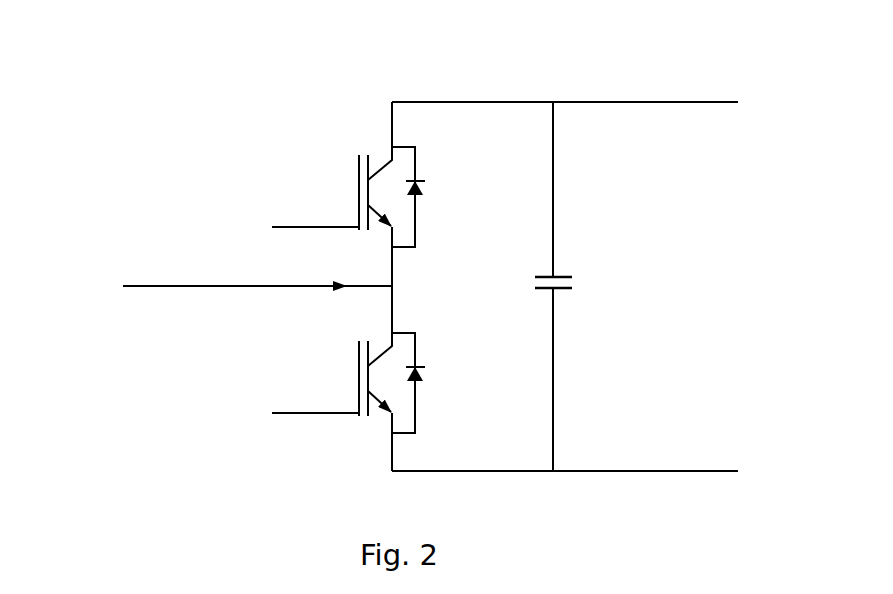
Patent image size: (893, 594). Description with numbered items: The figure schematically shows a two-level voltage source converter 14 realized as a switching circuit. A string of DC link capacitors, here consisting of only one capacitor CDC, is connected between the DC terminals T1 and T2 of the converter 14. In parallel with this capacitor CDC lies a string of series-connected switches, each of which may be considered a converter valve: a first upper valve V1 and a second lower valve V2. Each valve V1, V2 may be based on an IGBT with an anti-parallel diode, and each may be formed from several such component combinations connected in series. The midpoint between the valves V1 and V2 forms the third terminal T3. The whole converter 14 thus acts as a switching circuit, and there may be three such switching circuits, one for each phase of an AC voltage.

The two-level voltage source converter 14 is at (151, 207).
The DC terminal T1 is at (670, 102).
The DC terminal T2 is at (685, 471).
The third terminal T3 is at (168, 287).
The first upper valve V1 is at (348, 197).
The second lower valve V2 is at (348, 383).
The DC link capacitor CDC is at (578, 284).